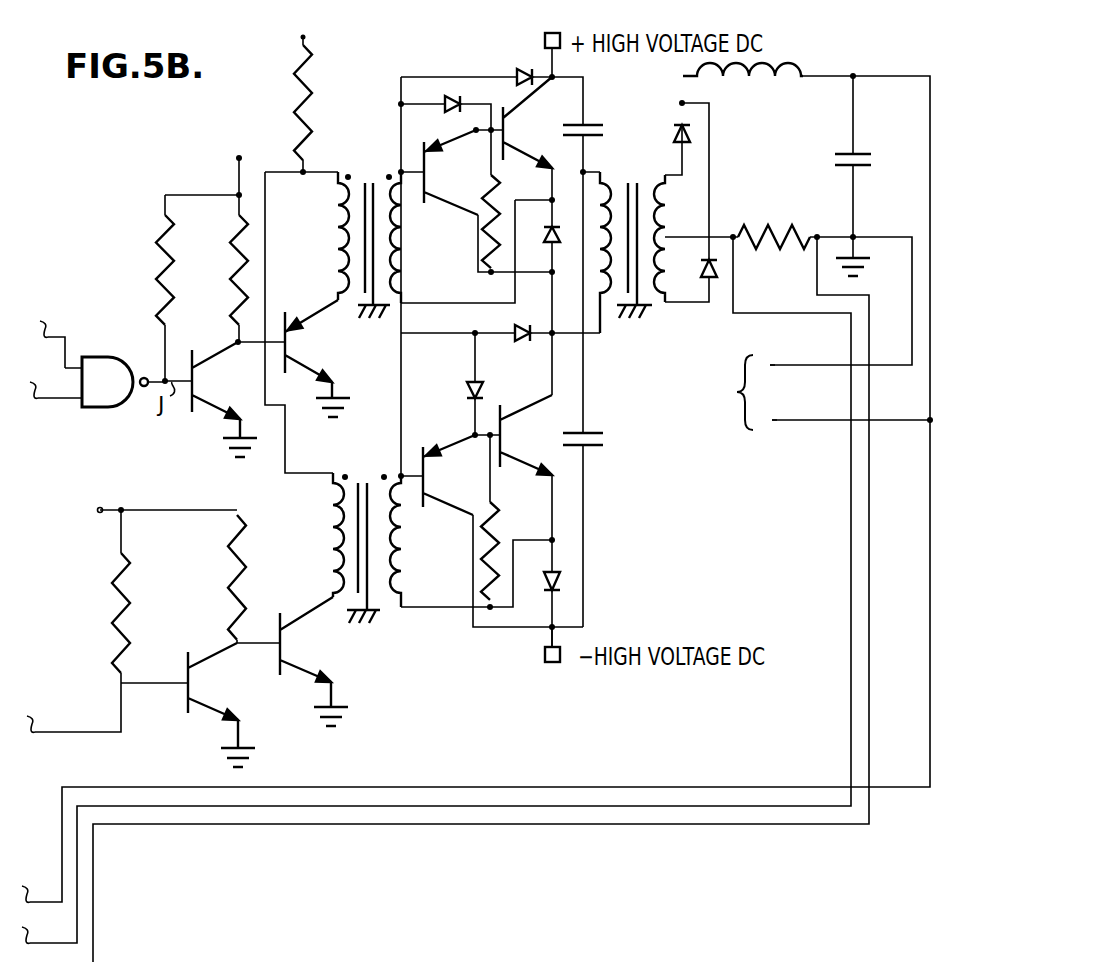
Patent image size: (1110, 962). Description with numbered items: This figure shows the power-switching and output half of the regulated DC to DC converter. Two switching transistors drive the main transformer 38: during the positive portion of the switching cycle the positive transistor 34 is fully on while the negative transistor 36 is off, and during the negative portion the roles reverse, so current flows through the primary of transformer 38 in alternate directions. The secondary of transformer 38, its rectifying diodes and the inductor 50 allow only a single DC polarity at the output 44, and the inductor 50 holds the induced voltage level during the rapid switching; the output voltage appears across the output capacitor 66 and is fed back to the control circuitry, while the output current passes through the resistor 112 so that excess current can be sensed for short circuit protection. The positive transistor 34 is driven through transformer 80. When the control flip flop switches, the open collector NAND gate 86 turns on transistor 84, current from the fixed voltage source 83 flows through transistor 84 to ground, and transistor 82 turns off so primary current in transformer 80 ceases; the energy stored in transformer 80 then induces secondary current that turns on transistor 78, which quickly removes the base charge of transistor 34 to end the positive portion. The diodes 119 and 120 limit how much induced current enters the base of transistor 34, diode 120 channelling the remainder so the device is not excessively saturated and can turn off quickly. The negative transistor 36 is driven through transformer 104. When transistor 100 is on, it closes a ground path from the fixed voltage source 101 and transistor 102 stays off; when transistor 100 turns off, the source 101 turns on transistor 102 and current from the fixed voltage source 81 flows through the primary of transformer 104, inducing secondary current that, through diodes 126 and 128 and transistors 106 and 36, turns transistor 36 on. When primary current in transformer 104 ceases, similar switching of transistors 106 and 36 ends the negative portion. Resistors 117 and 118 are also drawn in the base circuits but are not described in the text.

The positive transistor 34 is at (512, 131).
The negative transistor 36 is at (505, 438).
The transformer 38 is at (632, 181).
The output 44 is at (720, 392).
The inductor 50 is at (728, 78).
The output capacitor 66 is at (830, 158).
The transistor 78 is at (437, 177).
The transformer 80 is at (365, 180).
The fixed voltage source 81 is at (331, 96).
The transistor 82 is at (290, 346).
The fixed voltage source 83 is at (211, 226).
The transistor 84 is at (199, 381).
The open collector NAND gate 86 is at (121, 397).
The transistor 100 is at (190, 684).
The fixed voltage source 101 is at (132, 579).
The transistor 102 is at (284, 644).
The transformer 104 is at (364, 478).
The transistor 106 is at (429, 476).
The resistor 112 is at (745, 230).
The resistor 117 is at (497, 537).
The resistor 118 is at (508, 203).
The diode 119 is at (457, 91).
The diode 120 is at (525, 67).
The diode 126 is at (466, 390).
The diode 128 is at (520, 344).